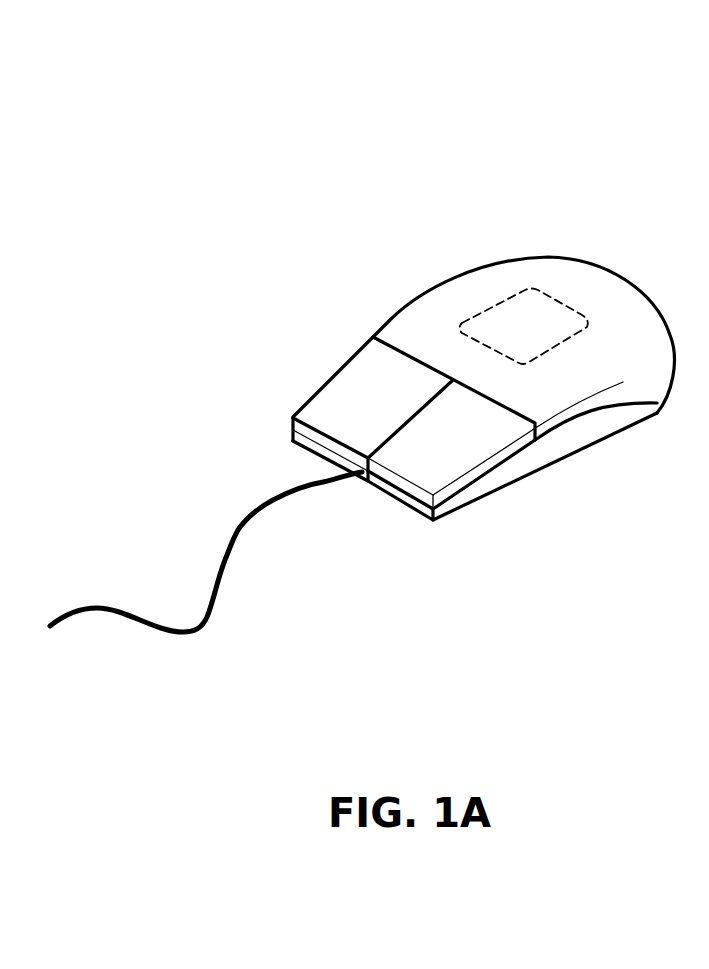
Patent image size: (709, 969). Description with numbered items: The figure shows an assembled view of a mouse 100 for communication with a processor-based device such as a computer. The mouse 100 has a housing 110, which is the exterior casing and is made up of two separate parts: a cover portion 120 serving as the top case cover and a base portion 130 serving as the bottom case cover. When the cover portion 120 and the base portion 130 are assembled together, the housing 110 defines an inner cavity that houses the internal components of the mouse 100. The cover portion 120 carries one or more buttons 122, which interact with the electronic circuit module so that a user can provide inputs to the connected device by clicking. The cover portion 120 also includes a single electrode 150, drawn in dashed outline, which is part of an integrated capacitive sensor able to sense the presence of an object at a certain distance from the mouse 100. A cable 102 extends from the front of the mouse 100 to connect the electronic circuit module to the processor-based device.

The mouse 100 is at (131, 118).
The cable 102 is at (240, 530).
The housing 110 is at (383, 323).
The cover portion 120 is at (427, 302).
The buttons 122 is at (353, 397).
The base portion 130 is at (558, 442).
The electrode 150 is at (538, 298).